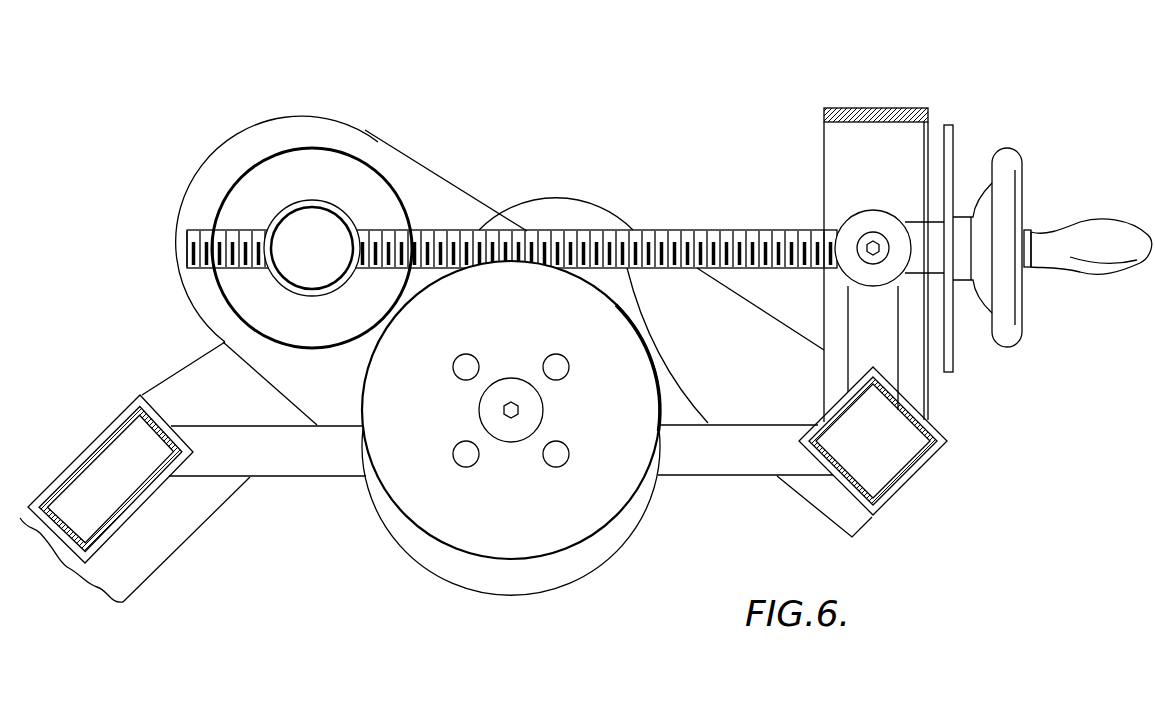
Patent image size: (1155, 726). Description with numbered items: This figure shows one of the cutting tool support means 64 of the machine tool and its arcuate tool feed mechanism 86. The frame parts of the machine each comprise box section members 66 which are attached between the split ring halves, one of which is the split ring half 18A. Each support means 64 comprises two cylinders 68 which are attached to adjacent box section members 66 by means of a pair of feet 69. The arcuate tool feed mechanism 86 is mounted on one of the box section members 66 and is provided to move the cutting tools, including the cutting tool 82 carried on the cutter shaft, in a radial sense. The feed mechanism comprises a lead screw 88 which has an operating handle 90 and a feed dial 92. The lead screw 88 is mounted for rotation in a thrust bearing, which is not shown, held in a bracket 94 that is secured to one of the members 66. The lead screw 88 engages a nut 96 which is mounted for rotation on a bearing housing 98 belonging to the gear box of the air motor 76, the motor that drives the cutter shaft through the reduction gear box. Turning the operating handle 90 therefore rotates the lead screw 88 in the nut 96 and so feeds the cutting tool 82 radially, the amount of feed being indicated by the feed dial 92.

The split ring half 18A is at (540, 215).
The cutting tool support means 64 is at (386, 568).
The box section members 66 is at (135, 515).
The cylinders 68 is at (612, 545).
The feet 69 is at (277, 458).
The air motor 76 is at (365, 132).
The cutting tool 82 is at (623, 477).
The arcuate tool feed mechanism 86 is at (1031, 138).
The lead screw 88 is at (728, 233).
The operating handle 90 is at (1010, 152).
The feed dial 92 is at (918, 232).
The bracket 94 is at (855, 227).
The nut 96 is at (323, 225).
The bearing housing 98 is at (380, 197).